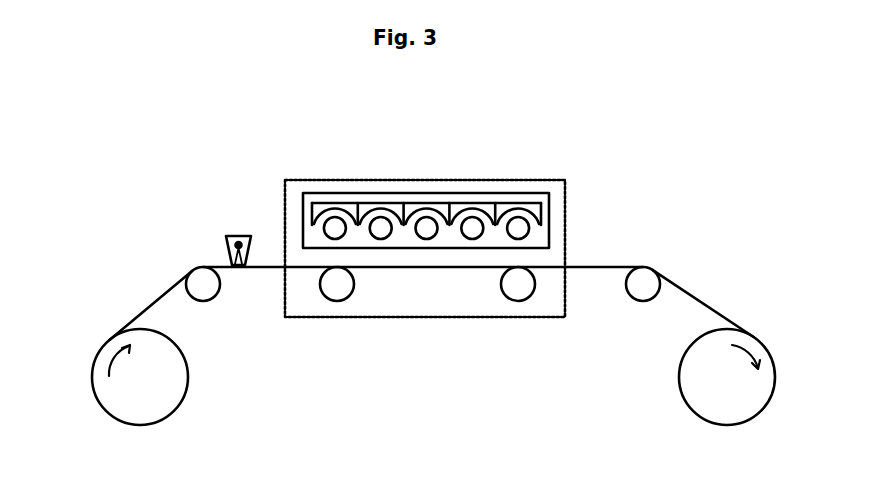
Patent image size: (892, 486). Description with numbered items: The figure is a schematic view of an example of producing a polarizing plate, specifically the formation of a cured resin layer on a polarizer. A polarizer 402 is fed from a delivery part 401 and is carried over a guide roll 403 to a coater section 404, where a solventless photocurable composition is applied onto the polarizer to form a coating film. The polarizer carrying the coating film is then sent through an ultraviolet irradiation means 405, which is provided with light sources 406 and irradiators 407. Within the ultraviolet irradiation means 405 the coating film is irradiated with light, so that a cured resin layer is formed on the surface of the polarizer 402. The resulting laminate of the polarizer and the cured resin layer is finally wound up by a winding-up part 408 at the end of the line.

The delivery part 401 is at (175, 378).
The polarizer 402 is at (158, 299).
The guide roll 403 is at (197, 278).
The coater section 404 is at (232, 236).
The ultraviolet irradiation means 405 is at (525, 180).
The light sources 406 is at (520, 230).
The irradiators 407 is at (537, 207).
The winding-up part 408 is at (693, 376).